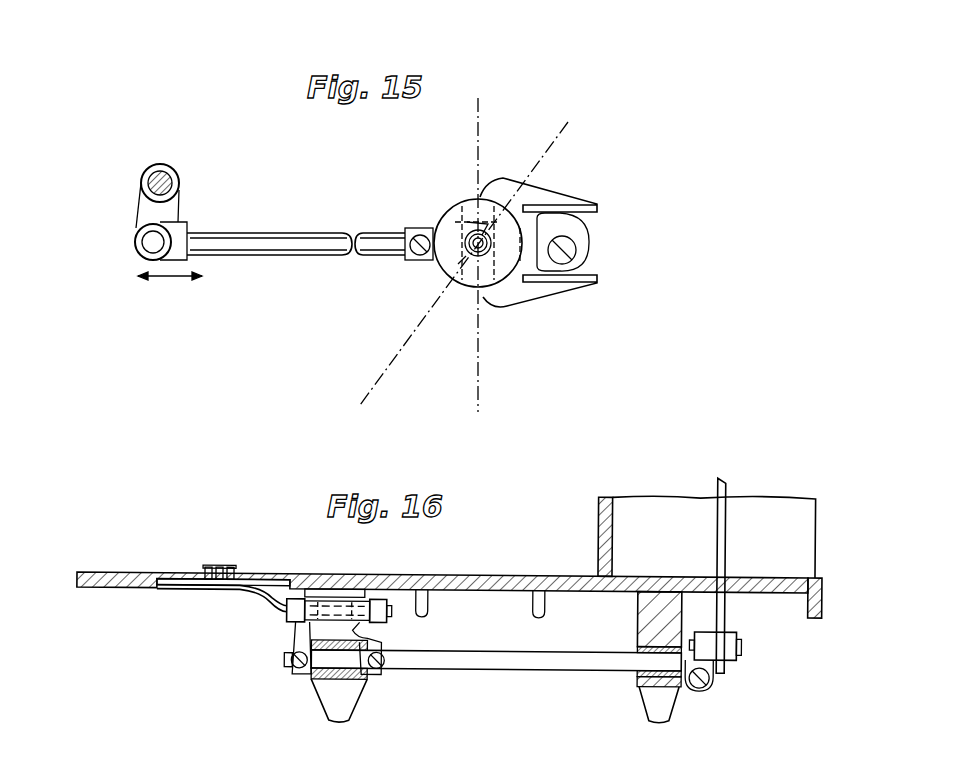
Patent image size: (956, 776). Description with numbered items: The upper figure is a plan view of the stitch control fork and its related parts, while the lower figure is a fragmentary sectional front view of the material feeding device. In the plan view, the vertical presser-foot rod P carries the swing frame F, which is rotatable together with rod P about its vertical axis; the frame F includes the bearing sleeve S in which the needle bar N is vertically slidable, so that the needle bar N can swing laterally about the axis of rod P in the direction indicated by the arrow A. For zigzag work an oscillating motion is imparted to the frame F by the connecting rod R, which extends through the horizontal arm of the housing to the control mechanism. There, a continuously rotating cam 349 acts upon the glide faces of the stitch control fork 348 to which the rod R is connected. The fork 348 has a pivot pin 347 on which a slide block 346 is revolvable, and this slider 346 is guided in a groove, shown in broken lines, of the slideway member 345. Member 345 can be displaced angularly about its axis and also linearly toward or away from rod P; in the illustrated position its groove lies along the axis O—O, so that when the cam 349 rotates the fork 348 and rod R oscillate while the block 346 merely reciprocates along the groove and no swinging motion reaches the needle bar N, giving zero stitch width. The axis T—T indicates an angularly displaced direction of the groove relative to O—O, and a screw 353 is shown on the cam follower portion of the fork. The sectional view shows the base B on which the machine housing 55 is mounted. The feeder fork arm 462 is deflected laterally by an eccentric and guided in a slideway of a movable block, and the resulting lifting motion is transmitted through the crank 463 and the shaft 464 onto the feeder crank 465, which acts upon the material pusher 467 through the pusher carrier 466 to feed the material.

In FIG. 15, the vertical rod P is at (150, 172).
In FIG. 15, the swing frame F is at (178, 205).
In FIG. 15, the bearing sleeve S is at (138, 237).
In FIG. 15, the needle bar N is at (150, 247).
In FIG. 15, the direction of movement A is at (170, 289).
In FIG. 15, the connecting rod R is at (285, 231).
In FIG. 15, the axis O— O is at (479, 261).
In FIG. 15, the axis T- T is at (465, 266).
In FIG. 15, the slideway member 345 is at (447, 212).
In FIG. 15, the slide block 346 is at (488, 266).
In FIG. 15, the pivot pin 347 is at (467, 247).
In FIG. 15, the stitch control fork 348 is at (543, 191).
In FIG. 15, the cam 349 is at (590, 231).
In FIG. 15, the screw 353 is at (586, 251).
In FIG. 16, the base B is at (518, 573).
In FIG. 16, the machine housing 55 is at (598, 518).
In FIG. 16, the feeder fork arm 462 is at (670, 635).
In FIG. 16, the crank 463 is at (711, 682).
In FIG. 16, the shaft 464 is at (513, 668).
In FIG. 16, the feeder crank 465 is at (385, 637).
In FIG. 16, the pusher carrier 466 is at (283, 610).
In FIG. 16, the material pusher 467 is at (217, 570).